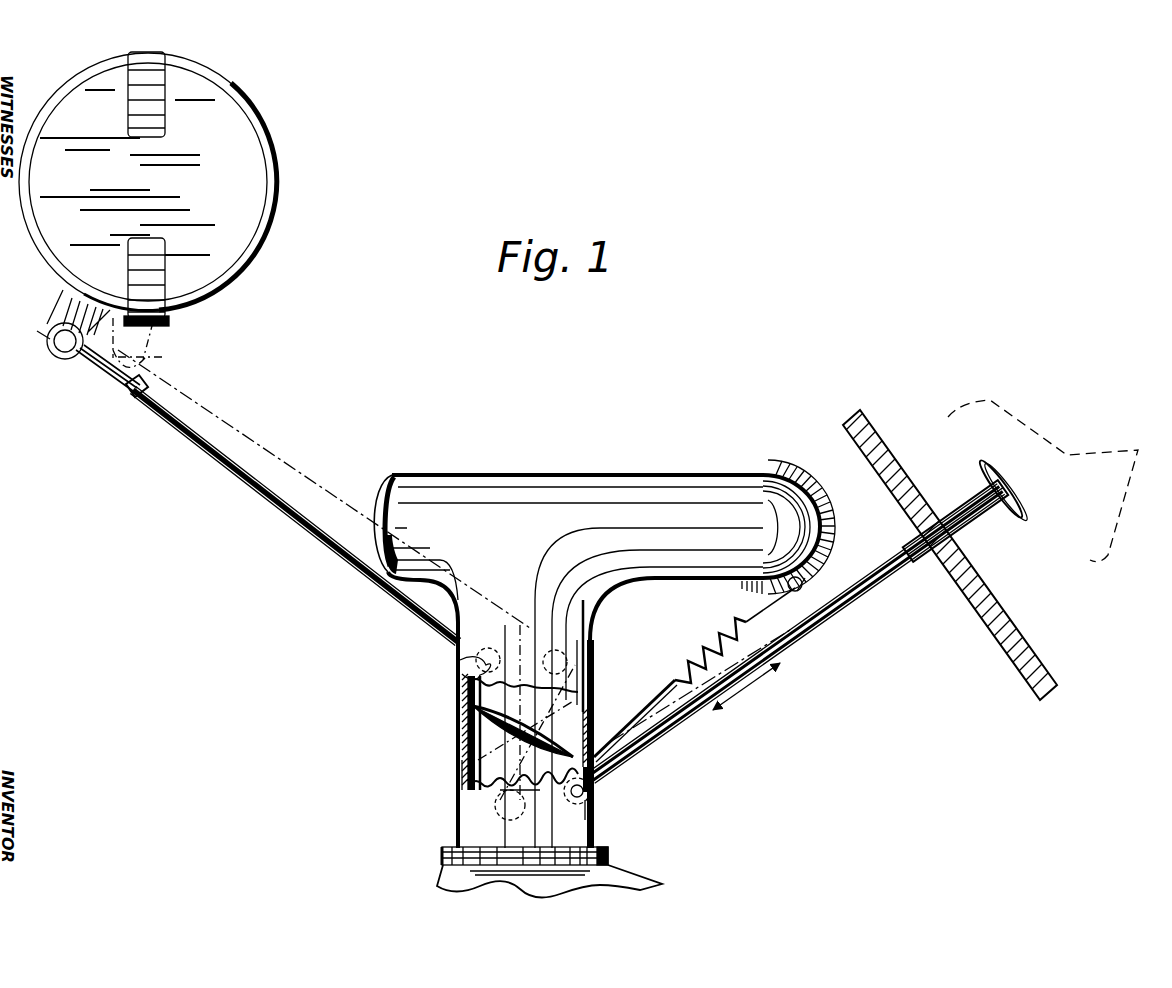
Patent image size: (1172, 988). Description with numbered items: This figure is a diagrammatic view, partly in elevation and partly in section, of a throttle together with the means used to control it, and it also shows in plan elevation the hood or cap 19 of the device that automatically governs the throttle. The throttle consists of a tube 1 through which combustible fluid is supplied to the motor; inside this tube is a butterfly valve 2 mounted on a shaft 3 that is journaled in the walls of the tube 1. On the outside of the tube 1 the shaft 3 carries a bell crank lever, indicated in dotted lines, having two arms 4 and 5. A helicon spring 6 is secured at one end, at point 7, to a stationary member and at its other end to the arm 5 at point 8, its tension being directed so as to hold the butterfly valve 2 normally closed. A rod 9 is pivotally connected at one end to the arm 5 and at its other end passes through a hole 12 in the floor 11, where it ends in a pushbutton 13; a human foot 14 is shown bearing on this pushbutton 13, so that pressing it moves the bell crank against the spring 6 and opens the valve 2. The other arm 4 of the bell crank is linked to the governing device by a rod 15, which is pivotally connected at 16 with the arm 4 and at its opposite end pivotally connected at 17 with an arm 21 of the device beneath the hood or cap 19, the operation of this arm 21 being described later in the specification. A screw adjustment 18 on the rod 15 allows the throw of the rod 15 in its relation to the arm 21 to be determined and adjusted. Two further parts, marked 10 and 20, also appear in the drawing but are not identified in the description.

The tube 1 is at (594, 680).
The butterfly valve 2 is at (460, 728).
The shaft 3 is at (462, 778).
The arm 4 is at (522, 648).
The arm 5 is at (540, 795).
The helicon spring 6 is at (752, 626).
The spring anchorage point 7 is at (803, 583).
The spring attachment point 8 is at (594, 812).
The rod 9 is at (680, 722).
The pin 10 is at (595, 792).
The floor 11 is at (982, 620).
The hole 12 is at (934, 570).
The pushbutton 13 is at (1014, 522).
The human foot 14 is at (1020, 408).
The rod 15 is at (300, 520).
The pivot connection 16 is at (465, 668).
The pivot connection 17 is at (65, 350).
The screw adjustment 18 is at (136, 398).
The hood or cap 19 is at (246, 150).
The clamp bands 20 is at (150, 97).
The arm 21 is at (70, 306).